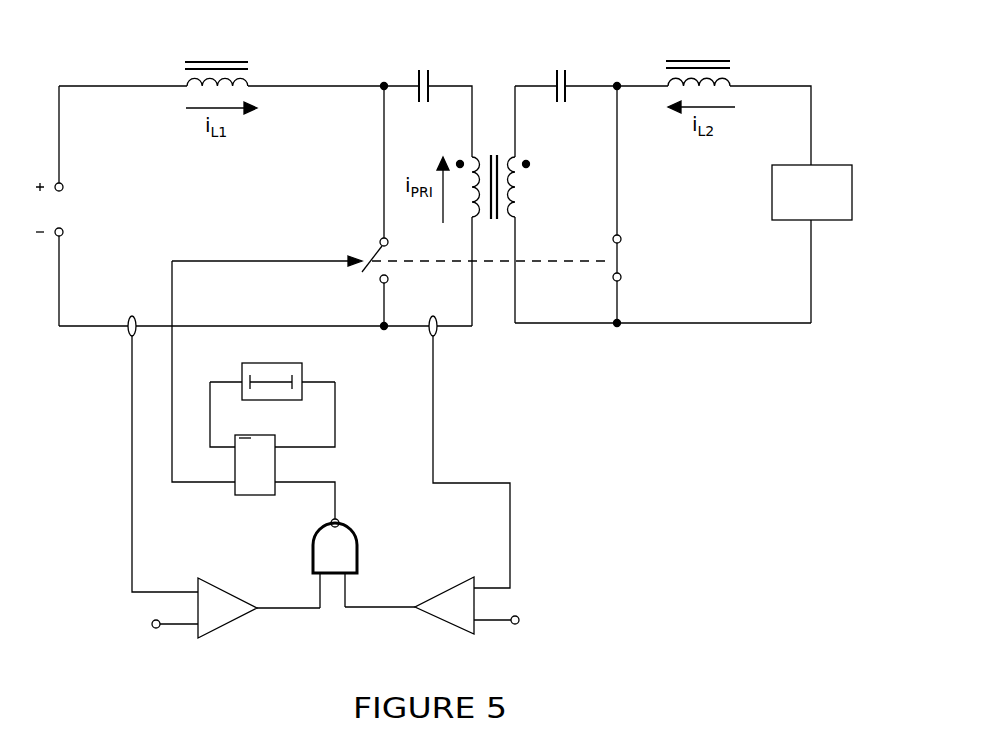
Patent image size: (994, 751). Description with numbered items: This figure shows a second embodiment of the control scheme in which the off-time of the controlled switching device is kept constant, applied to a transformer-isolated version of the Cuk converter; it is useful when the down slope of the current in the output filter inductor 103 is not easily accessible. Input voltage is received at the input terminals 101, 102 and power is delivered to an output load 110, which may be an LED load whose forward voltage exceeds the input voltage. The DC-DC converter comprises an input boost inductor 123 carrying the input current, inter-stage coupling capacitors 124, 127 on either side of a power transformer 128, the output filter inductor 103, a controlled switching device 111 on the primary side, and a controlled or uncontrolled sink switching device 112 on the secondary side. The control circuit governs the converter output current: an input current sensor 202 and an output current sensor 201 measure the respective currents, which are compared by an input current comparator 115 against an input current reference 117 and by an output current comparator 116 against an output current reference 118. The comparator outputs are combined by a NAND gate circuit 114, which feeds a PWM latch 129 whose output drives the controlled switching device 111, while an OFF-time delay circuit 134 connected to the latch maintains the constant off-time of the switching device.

The input terminal 101 is at (68, 187).
The input terminal 102 is at (68, 232).
The output filter inductor 103 is at (740, 62).
The output load 110 is at (855, 180).
The controlled switching device 111 is at (371, 243).
The sink switching device 112 is at (635, 252).
The NAND gate circuit 114 is at (302, 542).
The input current comparator 115 is at (230, 630).
The output current comparator 116 is at (432, 622).
The input current reference 117 is at (165, 635).
The output current reference 118 is at (503, 630).
The input boost inductor 123 is at (177, 70).
The inter-stage coupling capacitor 124 is at (405, 65).
The inter-stage coupling capacitor 127 is at (575, 70).
The power transformer 128 is at (530, 196).
The PWM latch 129 is at (234, 497).
The OFF-time delay circuit 134 is at (308, 370).
The output current sensor 201 is at (445, 335).
The input current sensor 202 is at (122, 338).